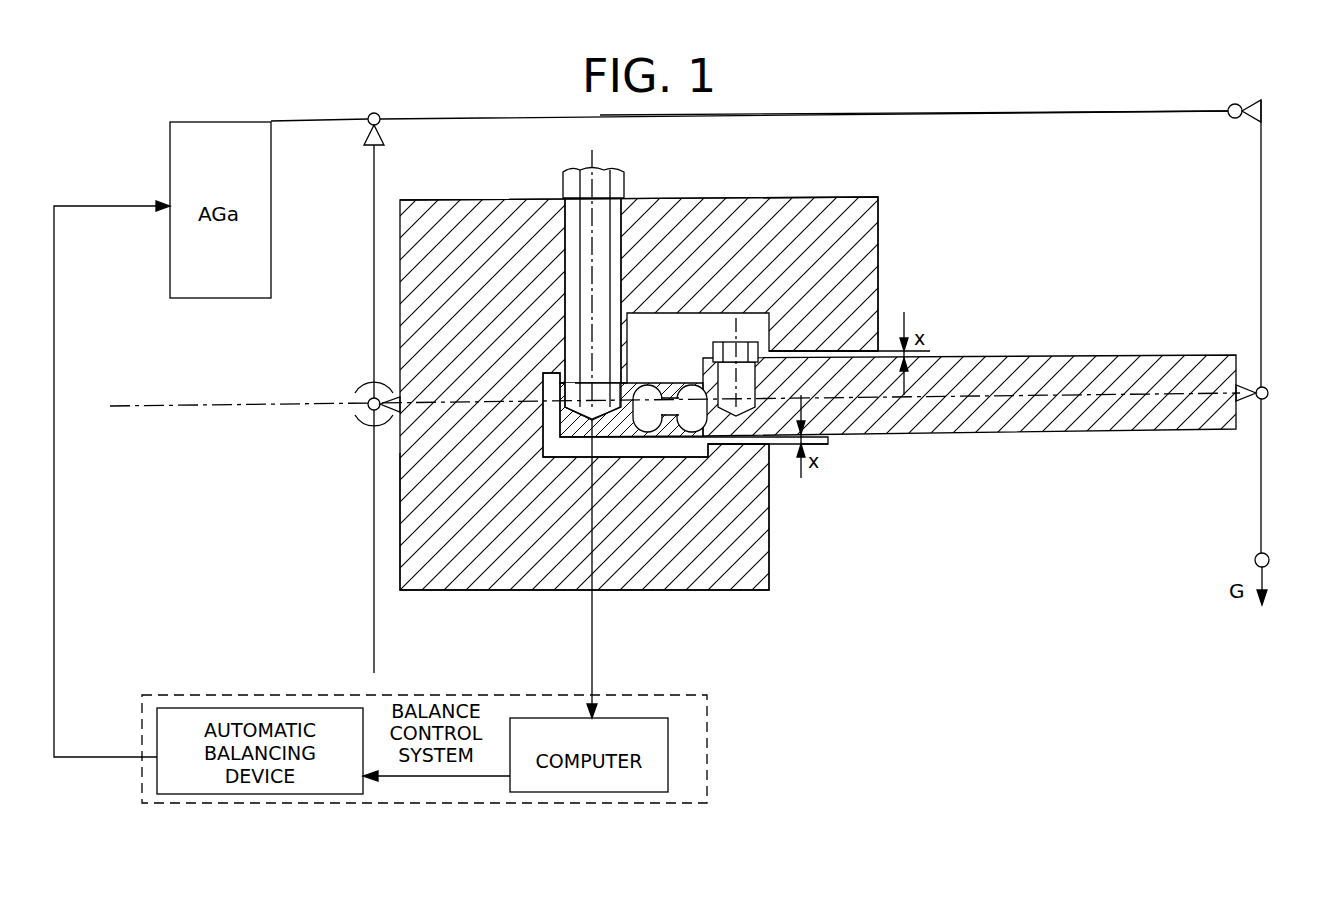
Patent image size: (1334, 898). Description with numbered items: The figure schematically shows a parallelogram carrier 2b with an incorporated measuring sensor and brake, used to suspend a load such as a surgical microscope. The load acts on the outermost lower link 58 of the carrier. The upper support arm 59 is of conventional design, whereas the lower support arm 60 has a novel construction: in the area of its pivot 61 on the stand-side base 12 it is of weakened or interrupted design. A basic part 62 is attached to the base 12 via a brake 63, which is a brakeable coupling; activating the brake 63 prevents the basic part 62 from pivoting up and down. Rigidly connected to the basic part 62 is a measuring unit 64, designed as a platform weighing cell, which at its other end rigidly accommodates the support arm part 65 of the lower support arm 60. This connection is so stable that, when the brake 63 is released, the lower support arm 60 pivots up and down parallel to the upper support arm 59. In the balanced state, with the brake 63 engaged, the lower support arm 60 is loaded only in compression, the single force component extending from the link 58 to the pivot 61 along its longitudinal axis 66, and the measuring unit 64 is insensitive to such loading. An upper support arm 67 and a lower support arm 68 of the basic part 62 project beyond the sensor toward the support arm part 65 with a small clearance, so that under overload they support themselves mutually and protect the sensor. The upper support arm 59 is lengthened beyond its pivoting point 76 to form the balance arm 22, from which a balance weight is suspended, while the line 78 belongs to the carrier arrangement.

The base 12 is at (374, 622).
The balance arm 22 is at (330, 119).
The outermost lower link 58 is at (1268, 390).
The upper support arm 59 is at (878, 116).
The lower support arm 60 is at (853, 515).
The pivot 61 is at (367, 408).
The basic part 62 is at (493, 471).
The brake 63 is at (366, 386).
The measuring unit 64 is at (655, 390).
The support arm part 65 is at (1025, 430).
The longitudinal axis 66 is at (208, 408).
The upper support arm 67 is at (765, 207).
The lower support arm 68 is at (762, 553).
The pivoting point 76 is at (380, 114).
The return line 78 is at (1258, 283).
The parallelogram carrier 2b is at (1101, 174).